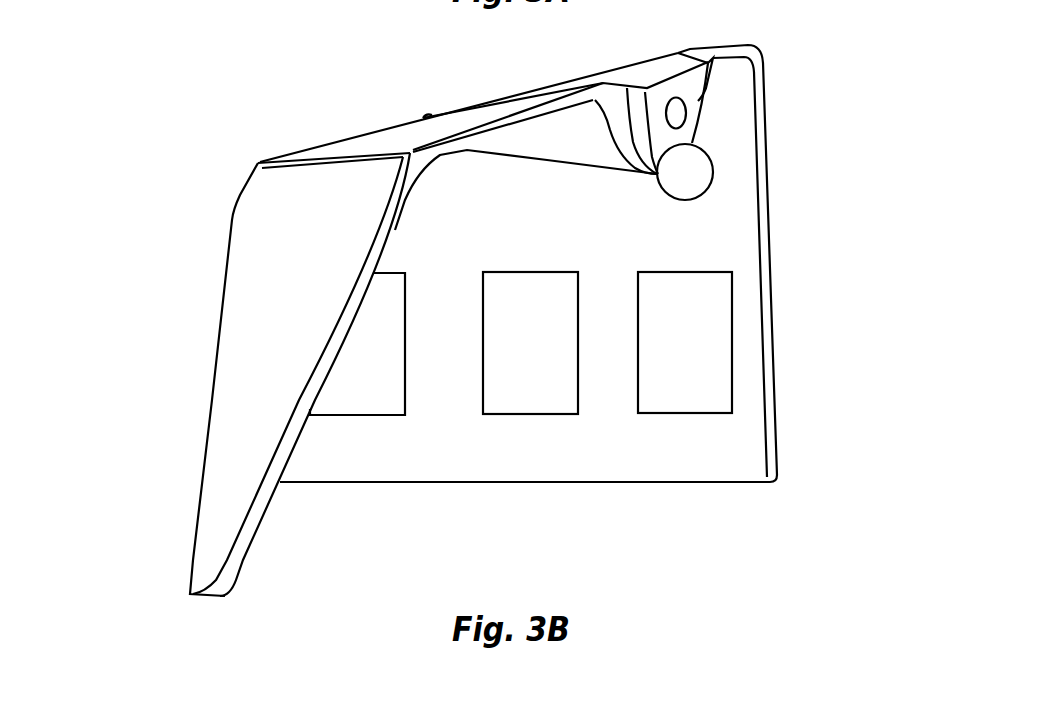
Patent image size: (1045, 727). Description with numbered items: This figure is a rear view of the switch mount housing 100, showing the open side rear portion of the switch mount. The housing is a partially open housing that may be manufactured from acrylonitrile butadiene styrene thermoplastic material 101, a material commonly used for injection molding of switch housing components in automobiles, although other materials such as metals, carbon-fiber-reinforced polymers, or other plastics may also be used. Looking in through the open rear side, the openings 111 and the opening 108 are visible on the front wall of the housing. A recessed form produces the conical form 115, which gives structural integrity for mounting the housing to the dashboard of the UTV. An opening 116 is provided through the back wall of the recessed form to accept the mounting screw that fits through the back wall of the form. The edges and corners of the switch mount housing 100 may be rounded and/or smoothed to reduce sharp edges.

The switch mount housing 100 is at (212, 163).
The acrylonitrile butadiene styrene (ABS) thermoplastic material 101 is at (383, 132).
The conical form 115 is at (604, 144).
The opening 116 is at (687, 110).
The opening 108 is at (713, 172).
The openings 111 is at (690, 417).